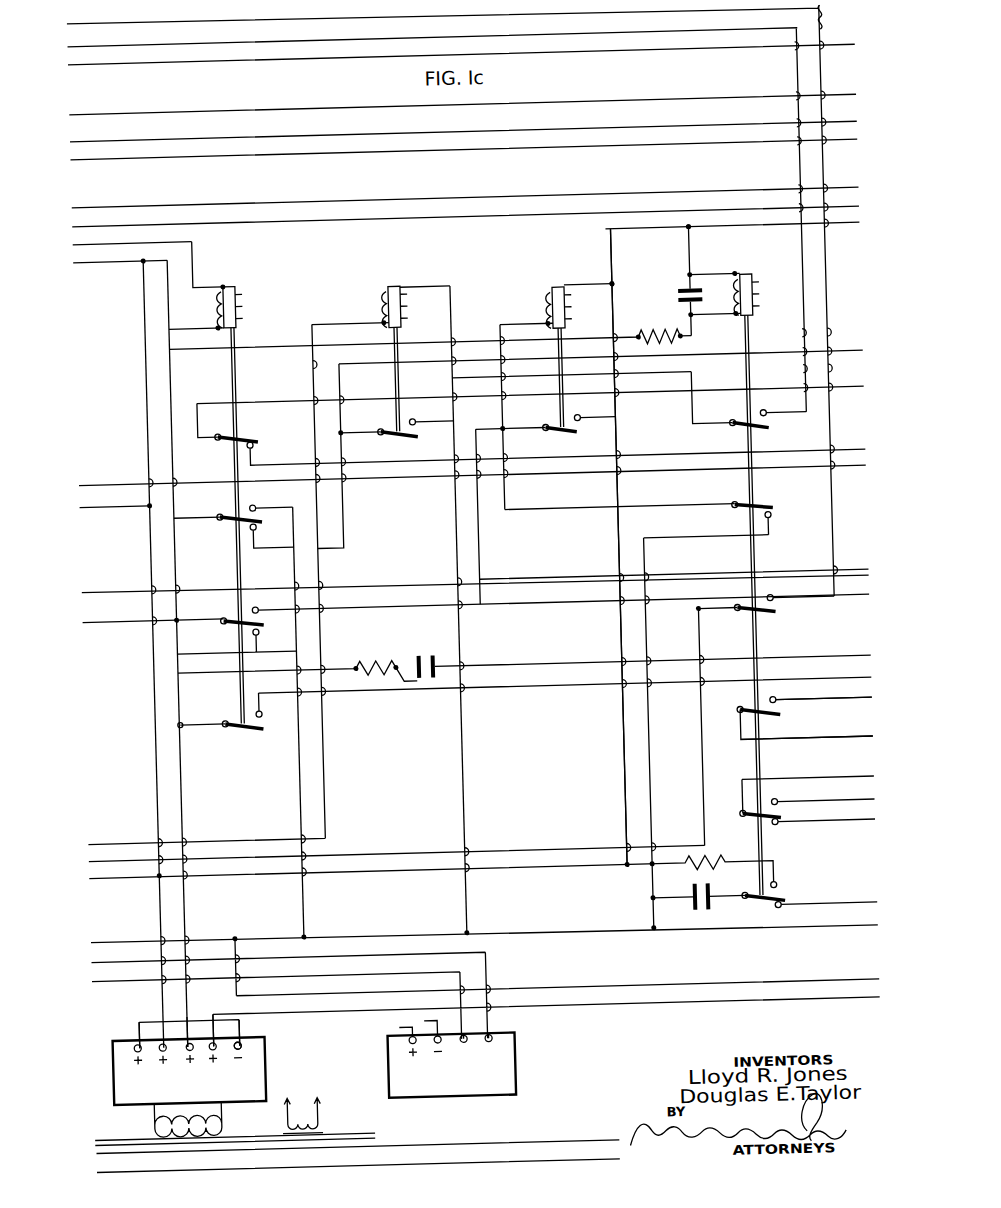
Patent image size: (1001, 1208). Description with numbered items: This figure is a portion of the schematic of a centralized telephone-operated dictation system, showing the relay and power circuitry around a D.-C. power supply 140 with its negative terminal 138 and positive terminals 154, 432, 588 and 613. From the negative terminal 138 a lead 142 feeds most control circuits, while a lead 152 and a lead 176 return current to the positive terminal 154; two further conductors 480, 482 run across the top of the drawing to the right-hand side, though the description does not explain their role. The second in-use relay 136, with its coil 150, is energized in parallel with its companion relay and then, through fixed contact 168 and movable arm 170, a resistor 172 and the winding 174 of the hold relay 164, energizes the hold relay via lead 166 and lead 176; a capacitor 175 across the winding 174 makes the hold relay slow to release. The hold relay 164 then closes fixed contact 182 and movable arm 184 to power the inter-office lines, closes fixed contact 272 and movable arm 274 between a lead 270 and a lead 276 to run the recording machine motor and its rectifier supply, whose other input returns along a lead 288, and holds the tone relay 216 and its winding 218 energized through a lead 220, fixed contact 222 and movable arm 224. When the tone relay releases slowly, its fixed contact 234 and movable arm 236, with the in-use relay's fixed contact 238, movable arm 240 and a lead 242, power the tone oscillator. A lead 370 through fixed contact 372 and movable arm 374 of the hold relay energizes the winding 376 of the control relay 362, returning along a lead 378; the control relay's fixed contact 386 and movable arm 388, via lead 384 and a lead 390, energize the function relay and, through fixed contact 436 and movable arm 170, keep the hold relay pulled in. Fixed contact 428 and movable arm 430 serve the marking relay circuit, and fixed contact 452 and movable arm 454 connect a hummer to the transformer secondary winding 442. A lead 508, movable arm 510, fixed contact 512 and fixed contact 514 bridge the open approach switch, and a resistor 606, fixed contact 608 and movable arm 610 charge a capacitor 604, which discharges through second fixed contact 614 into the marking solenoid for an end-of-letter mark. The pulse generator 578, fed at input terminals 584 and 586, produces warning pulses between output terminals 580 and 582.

The second in-use relay 136 is at (245, 290).
The coil of in-use relay 150 is at (244, 312).
The control relay 362 is at (390, 298).
The winding of control relay 376 is at (410, 318).
The tone relay 216 is at (553, 296).
The tone relay winding 218 is at (572, 322).
The hold relay 164 is at (760, 292).
The winding of hold relay 174 is at (766, 326).
The capacitor 175 is at (685, 308).
The resistor 172 is at (656, 344).
The lead 370 is at (80, 47).
The conductor 482 is at (93, 208).
The conductor 480 is at (76, 236).
The lead 390 is at (850, 368).
The lead 152 is at (148, 405).
The lead 378 is at (314, 384).
The lead 166 is at (290, 573).
The lead 384 is at (452, 539).
The lead 176 is at (194, 884).
The lead 220 is at (668, 553).
The lead 142 is at (83, 944).
The lead 288 is at (88, 1154).
The movable arm of in-use relay 454 is at (243, 438).
The fixed contact of in-use relay 452 is at (257, 451).
The movable arm of in-use relay 170 is at (222, 528).
The fixed contact of in-use relay 168 is at (256, 512).
The fixed contact of in-use relay 436 is at (260, 537).
The movable arm of in-use relay 240 is at (220, 630).
The fixed contact of in-use relay 238 is at (248, 615).
The lead 242 is at (254, 655).
The movable arm of in-use relay 430 is at (252, 738).
The fixed contact of in-use relay 428 is at (256, 720).
The movable arm of control relay 388 is at (408, 446).
The fixed contact of control relay 386 is at (416, 432).
The movable arm of tone relay 236 is at (565, 449).
The fixed contact of tone relay 234 is at (579, 432).
The movable arm of hold relay 374 is at (750, 446).
The fixed contact of hold relay 372 is at (768, 430).
The movable arm of hold relay 224 is at (769, 520).
The fixed contact of hold relay 222 is at (772, 539).
The movable arm of hold relay 184 is at (740, 634).
The fixed contact of hold relay 182 is at (768, 617).
The movable arm of hold relay 274 is at (744, 724).
The fixed contact of hold relay 272 is at (770, 723).
The lead 270 is at (852, 720).
The lead 276 is at (854, 760).
The lead 508 is at (854, 793).
The movable arm of hold relay 510 is at (742, 834).
The fixed contact of hold relay 512 is at (772, 820).
The fixed contact of limit relay 514 is at (772, 841).
The resistor 606 is at (700, 876).
The fixed contact of hold relay 608 is at (770, 900).
The capacitor 604 is at (682, 922).
The movable arm of hold relay 610 is at (742, 918).
The second fixed contact of hold relay 614 is at (768, 925).
The D.-C. power supply 140 is at (190, 1092).
The negative terminal 138 is at (228, 1053).
The positive terminal 154 is at (178, 1028).
The positive terminal 432 is at (196, 1018).
The positive terminal 588 is at (118, 1031).
The positive terminal 613 is at (220, 1028).
The secondary winding 442 is at (305, 1127).
The pulse generator 578 is at (508, 1068).
The input terminal 586 is at (386, 1040).
The input terminal 584 is at (414, 1036).
The output terminal 580 is at (464, 1046).
The output terminal 582 is at (480, 1052).